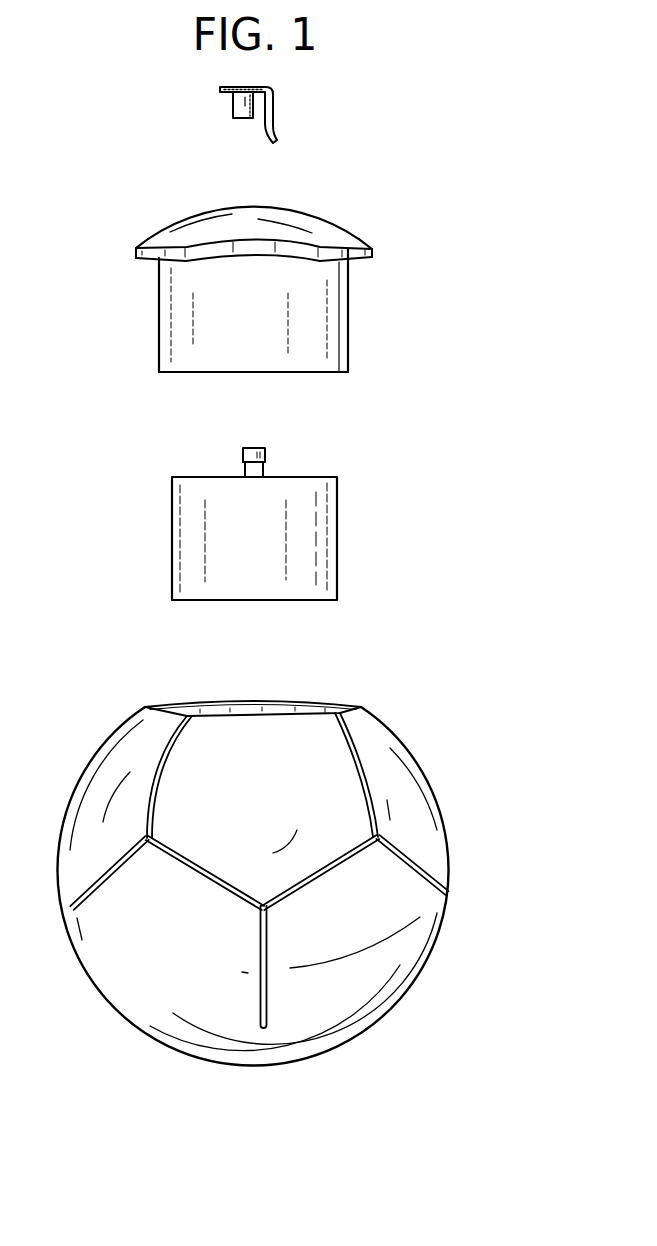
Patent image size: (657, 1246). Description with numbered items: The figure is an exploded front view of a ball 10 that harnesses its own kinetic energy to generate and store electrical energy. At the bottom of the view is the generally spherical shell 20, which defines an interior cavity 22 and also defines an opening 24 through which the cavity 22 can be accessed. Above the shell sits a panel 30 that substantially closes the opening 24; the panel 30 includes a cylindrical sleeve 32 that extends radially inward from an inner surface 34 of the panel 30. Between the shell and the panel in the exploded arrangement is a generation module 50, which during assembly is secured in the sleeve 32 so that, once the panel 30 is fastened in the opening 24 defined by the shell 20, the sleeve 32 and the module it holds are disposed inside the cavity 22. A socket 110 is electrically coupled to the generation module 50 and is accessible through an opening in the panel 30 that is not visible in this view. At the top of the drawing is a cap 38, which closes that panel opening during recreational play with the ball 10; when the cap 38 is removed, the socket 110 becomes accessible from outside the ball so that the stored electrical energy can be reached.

The ball 10 is at (458, 465).
The generally spherical shell 20 is at (398, 787).
The cavity 22 is at (303, 700).
The opening 24 is at (145, 707).
The panel 30 is at (200, 227).
The cylindrical sleeve 32 is at (318, 330).
The inner surface 34 is at (283, 252).
The cap 38 is at (245, 101).
The generation module 50 is at (310, 538).
The socket 110 is at (255, 470).